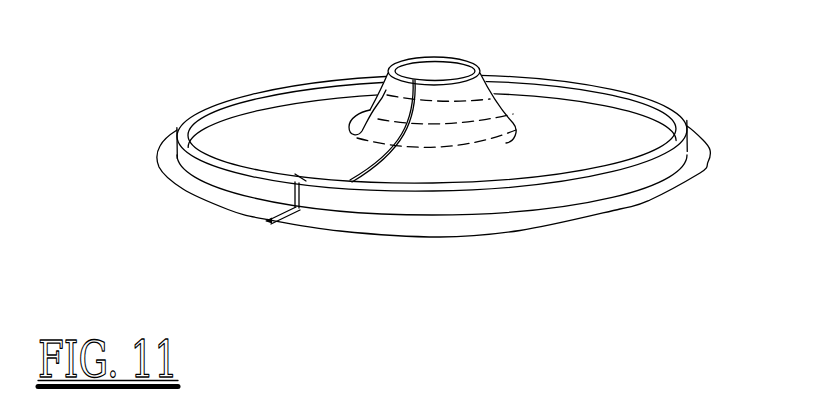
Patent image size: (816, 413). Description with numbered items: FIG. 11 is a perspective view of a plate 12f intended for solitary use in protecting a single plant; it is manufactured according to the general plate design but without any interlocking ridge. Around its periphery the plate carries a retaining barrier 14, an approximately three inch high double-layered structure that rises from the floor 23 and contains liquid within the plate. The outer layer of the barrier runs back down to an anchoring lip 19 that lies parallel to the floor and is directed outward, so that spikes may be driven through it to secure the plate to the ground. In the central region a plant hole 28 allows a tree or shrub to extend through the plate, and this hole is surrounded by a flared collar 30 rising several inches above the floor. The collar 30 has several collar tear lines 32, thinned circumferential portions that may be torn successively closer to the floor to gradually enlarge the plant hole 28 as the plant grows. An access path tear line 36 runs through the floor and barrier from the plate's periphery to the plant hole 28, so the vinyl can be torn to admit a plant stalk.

The plate 12f is at (415, 136).
The retaining barrier 14 is at (655, 101).
The anchoring lip 19 is at (535, 215).
The floor 23 is at (561, 150).
The plant hole 28 is at (466, 60).
The flared collar 30 is at (503, 112).
The collar tear line 32 is at (353, 112).
The access path tear line 36 is at (297, 207).